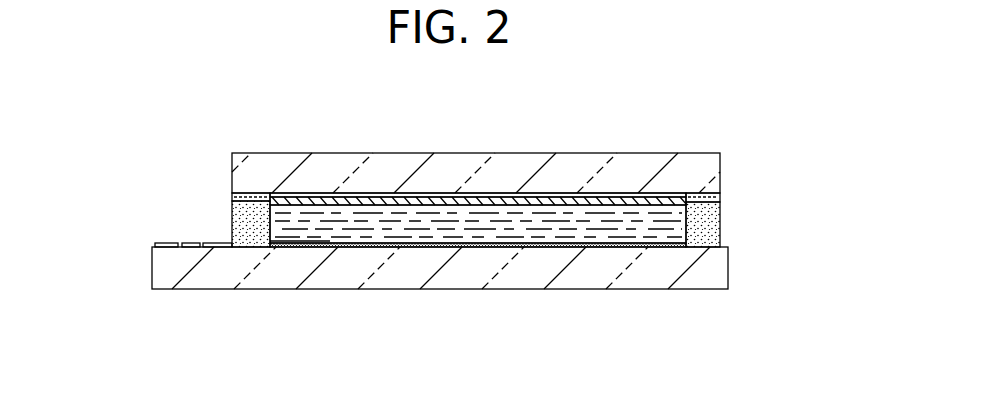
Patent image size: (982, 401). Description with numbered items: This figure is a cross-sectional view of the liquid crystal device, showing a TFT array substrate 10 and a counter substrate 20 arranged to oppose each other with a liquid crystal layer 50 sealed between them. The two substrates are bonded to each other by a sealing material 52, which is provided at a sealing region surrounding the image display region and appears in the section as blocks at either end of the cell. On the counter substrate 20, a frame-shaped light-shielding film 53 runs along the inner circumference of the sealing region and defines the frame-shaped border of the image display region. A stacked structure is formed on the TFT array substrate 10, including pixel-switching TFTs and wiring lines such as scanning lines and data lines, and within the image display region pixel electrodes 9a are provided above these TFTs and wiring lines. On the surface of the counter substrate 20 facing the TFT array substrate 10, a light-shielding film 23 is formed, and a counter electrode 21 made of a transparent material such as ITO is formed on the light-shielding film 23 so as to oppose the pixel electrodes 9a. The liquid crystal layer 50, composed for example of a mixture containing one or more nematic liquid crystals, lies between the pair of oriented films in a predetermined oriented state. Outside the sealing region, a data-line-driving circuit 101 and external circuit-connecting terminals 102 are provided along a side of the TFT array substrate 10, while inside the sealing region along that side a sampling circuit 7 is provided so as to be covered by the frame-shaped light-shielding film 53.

The TFT array substrate 10 is at (507, 280).
The counter substrate 20 is at (387, 163).
The counter electrode 21 is at (607, 196).
The light-shielding film 23 is at (464, 195).
The liquid crystal layer 50 is at (417, 243).
The sealing material 52 is at (245, 227).
The frame-shaped light-shielding film 53 is at (268, 194).
The sampling circuit 7 is at (277, 246).
The pixel electrodes 9a is at (320, 247).
The data-line-driving circuit 101 is at (207, 243).
The external circuit-connecting terminals 102 is at (160, 243).